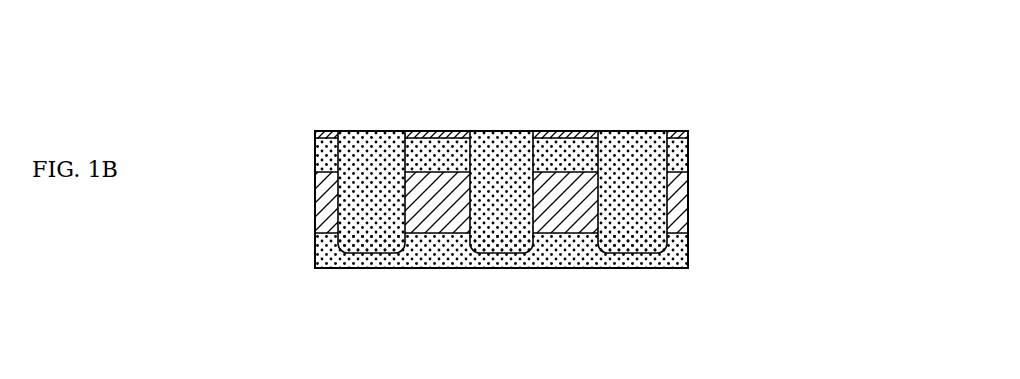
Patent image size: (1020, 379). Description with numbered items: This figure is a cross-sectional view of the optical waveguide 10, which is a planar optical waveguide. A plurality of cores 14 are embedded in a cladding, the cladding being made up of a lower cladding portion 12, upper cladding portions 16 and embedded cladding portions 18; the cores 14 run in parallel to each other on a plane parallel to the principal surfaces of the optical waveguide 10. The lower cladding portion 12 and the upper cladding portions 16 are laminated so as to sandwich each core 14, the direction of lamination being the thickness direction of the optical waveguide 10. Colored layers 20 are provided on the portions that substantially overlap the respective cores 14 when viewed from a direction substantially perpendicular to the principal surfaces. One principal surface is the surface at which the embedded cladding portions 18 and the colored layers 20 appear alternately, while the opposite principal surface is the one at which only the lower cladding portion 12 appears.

The optical waveguide 10 is at (812, 110).
The lower cladding portion 12 is at (690, 247).
The core 14 is at (437, 216).
The upper cladding portion 16 is at (460, 131).
The embedded cladding portion 18 is at (363, 240).
The colored layer 20 is at (325, 131).